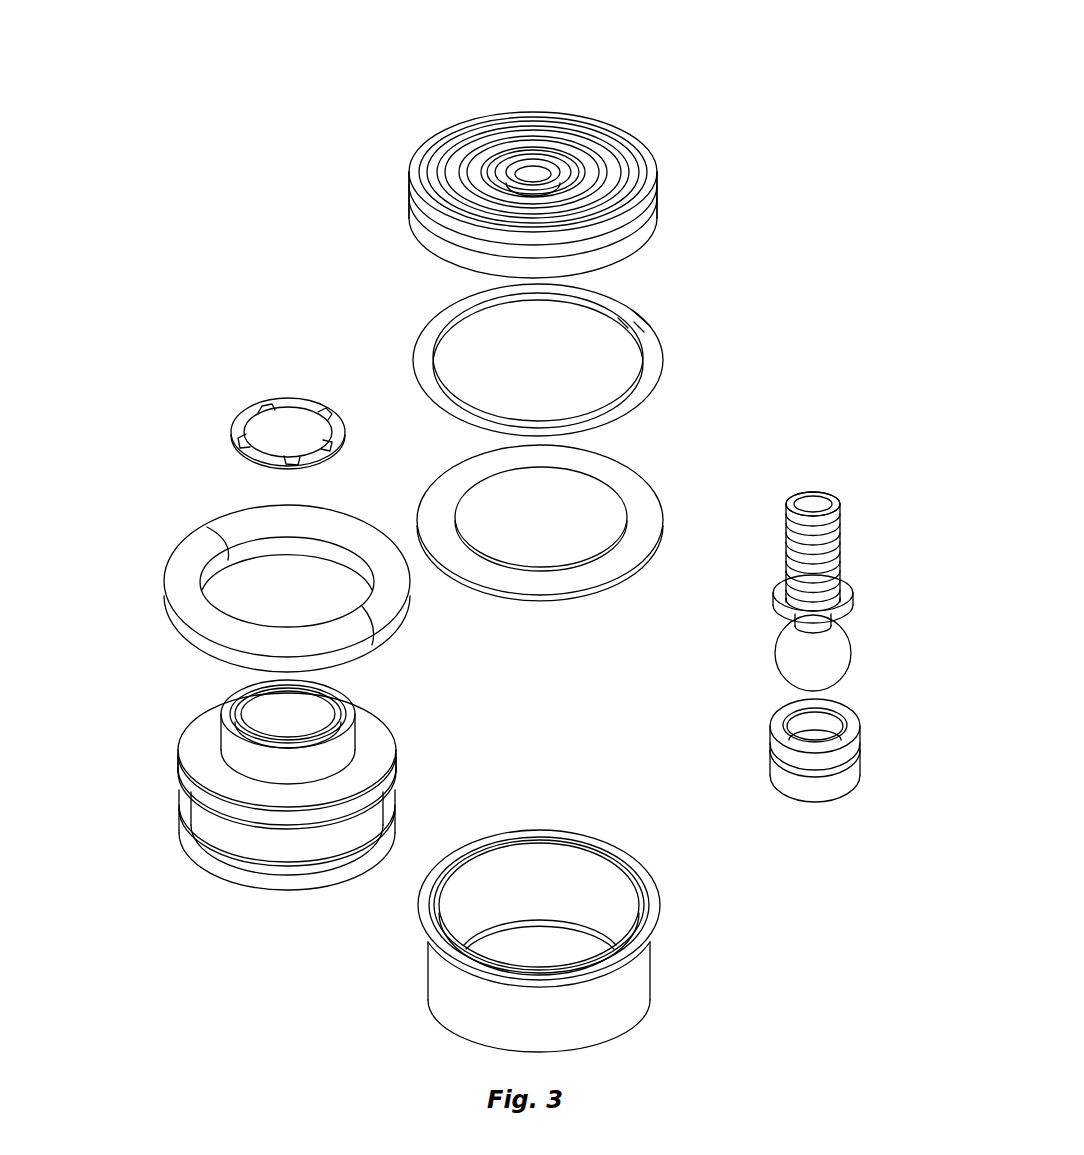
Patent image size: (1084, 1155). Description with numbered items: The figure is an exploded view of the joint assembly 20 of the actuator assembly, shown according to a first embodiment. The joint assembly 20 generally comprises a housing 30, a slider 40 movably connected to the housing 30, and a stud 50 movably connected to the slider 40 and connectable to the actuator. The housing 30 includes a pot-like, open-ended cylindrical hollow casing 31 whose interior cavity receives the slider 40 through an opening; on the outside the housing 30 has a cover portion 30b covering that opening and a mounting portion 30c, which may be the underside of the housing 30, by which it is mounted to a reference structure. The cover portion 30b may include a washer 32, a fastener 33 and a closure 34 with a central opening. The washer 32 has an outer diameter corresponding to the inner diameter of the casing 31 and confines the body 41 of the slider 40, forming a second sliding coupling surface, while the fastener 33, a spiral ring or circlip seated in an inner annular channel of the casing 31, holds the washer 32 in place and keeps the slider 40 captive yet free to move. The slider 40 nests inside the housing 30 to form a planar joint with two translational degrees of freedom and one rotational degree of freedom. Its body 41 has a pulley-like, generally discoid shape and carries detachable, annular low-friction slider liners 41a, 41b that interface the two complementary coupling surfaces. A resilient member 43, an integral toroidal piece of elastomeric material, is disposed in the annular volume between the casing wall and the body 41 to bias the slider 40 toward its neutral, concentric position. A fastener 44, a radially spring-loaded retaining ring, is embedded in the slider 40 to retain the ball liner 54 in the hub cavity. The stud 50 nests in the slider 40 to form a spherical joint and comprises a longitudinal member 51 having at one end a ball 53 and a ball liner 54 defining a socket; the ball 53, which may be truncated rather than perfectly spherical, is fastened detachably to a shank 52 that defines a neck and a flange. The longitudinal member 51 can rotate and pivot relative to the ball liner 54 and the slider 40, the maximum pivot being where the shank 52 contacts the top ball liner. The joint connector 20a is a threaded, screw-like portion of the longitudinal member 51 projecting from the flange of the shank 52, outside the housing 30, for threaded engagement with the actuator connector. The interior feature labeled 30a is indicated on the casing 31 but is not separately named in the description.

The joint assembly 20 is at (230, 84).
The joint connector 20a is at (813, 493).
The housing 30 is at (648, 120).
The cup interior 30a is at (582, 882).
The cover portion 30b is at (625, 112).
The mounting portion 30c is at (453, 1046).
The casing 31 is at (637, 992).
The washer 32 is at (433, 510).
The fastener 33 is at (425, 367).
The closure 34 is at (433, 206).
The slider 40 is at (135, 385).
The body 41 is at (215, 820).
The slider liner 41a is at (248, 873).
The slider liner 41b is at (218, 770).
The resilient member 43 is at (243, 530).
The fastener 44 is at (258, 415).
The stud 50 is at (737, 512).
The longitudinal member 51 is at (842, 516).
The shank 52 is at (783, 593).
The ball 53 is at (845, 652).
The ball liner 54 is at (852, 748).